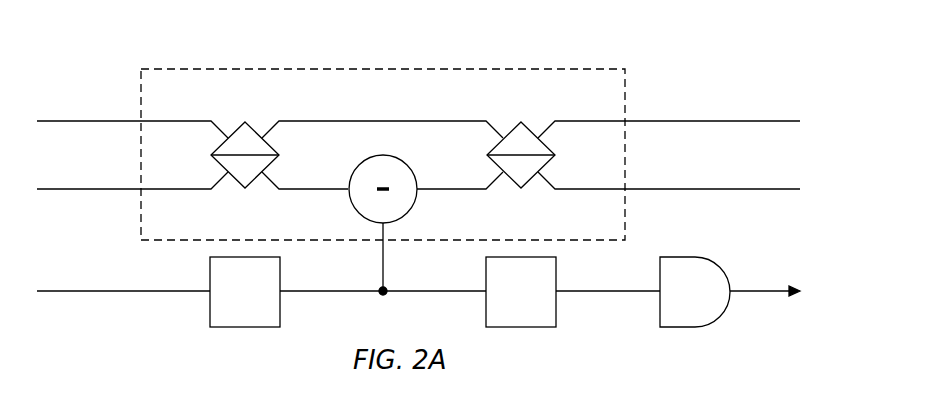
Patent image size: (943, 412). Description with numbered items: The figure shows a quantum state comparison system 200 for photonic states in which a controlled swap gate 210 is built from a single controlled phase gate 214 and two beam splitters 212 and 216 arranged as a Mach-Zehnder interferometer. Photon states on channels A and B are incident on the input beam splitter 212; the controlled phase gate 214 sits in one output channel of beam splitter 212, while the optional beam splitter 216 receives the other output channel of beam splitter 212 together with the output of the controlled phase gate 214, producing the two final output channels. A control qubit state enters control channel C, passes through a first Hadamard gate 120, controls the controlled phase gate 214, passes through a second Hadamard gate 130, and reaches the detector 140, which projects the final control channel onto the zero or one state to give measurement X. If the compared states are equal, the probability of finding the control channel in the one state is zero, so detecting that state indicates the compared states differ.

The quantum state comparison system 200 is at (140, 32).
The controlled swap gate 210 is at (400, 98).
The input beam splitter 212 is at (244, 125).
The controlled phase gate 214 is at (411, 168).
The beam splitter 216 is at (523, 130).
The Hadamard gate 120 is at (261, 315).
The Hadamard gate 130 is at (537, 315).
The detector 140 is at (711, 301).